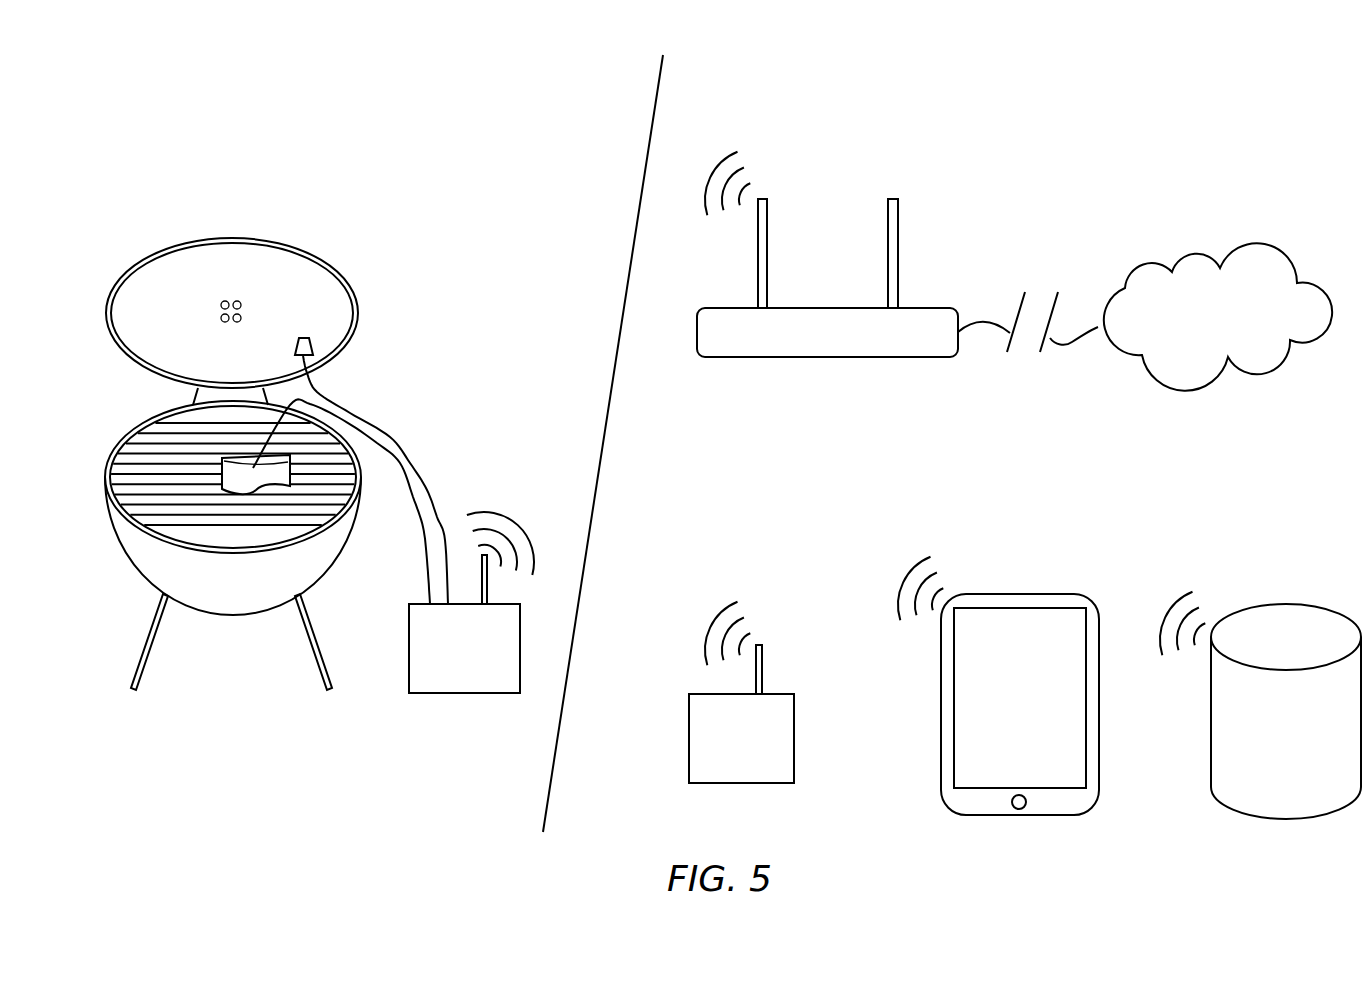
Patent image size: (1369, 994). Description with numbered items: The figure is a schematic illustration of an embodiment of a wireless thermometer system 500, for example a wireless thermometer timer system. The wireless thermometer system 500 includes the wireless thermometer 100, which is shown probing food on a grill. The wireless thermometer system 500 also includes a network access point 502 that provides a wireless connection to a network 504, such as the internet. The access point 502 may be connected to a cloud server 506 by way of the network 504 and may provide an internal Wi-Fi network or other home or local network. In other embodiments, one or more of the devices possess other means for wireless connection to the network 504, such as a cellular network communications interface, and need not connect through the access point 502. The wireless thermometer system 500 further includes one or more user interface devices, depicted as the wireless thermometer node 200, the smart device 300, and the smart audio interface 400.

The wireless thermometer system 500 is at (189, 130).
The wireless thermometer 100 is at (451, 693).
The wireless thermometer node 200 is at (794, 733).
The smart device 300 is at (1025, 594).
The smart audio interface 400 is at (1267, 603).
The network access point 502 is at (748, 357).
The network 504 is at (1010, 340).
The cloud server 506 is at (1235, 247).